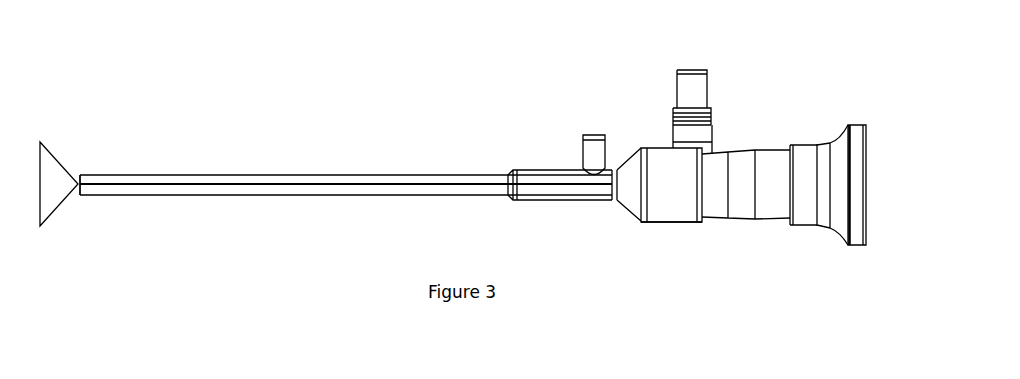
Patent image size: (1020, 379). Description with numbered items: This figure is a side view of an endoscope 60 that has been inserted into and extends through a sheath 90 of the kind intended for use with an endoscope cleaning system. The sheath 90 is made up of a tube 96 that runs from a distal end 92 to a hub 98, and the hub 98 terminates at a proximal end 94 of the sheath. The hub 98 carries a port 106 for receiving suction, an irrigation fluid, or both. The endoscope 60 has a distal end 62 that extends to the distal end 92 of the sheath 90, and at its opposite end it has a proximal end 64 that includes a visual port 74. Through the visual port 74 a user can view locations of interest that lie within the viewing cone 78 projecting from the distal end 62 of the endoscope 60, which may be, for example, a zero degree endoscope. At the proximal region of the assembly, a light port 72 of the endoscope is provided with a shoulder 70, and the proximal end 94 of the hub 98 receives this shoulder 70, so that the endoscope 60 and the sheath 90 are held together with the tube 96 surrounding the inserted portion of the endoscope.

The viewing cone 78 is at (71, 139).
The tube 96 is at (173, 170).
The distal end of the endoscope 62 is at (85, 220).
The distal end of the sheath 92 is at (80, 212).
The port 106 is at (595, 147).
The hub 98 is at (642, 148).
The sheath 90 is at (608, 101).
The shoulder 70 is at (647, 119).
The proximal end of the sheath 94 is at (700, 241).
The light port 72 is at (695, 83).
The endoscope 60 is at (795, 117).
The visual port 74 is at (847, 250).
The proximal end of the endoscope 64 is at (869, 255).